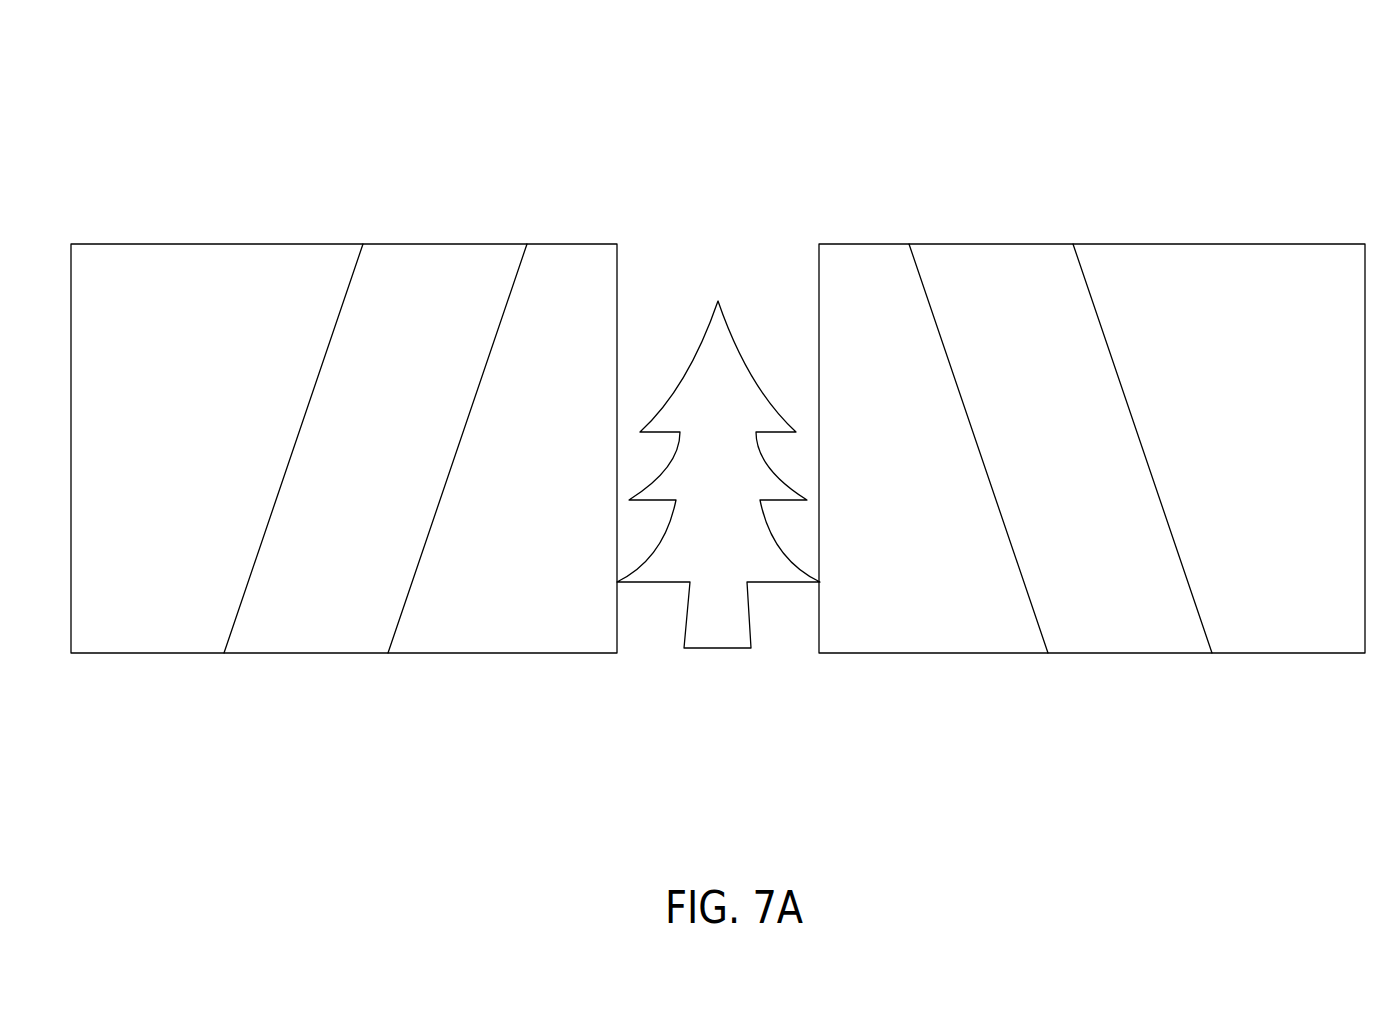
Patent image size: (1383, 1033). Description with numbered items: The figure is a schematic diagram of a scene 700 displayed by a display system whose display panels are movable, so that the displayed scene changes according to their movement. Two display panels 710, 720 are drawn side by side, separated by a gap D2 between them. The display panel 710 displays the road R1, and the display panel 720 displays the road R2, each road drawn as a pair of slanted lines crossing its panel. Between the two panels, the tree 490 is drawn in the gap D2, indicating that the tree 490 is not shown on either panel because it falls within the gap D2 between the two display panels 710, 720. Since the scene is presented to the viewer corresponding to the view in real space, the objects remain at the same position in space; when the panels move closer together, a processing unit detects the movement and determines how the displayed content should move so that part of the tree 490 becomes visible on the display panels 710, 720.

The scene 700 is at (1355, 43).
The display panel 710 is at (250, 244).
The display panel 720 is at (1187, 244).
The road R1 is at (297, 440).
The road R2 is at (1143, 440).
The gap D2 is at (820, 223).
The tree 490 is at (750, 621).